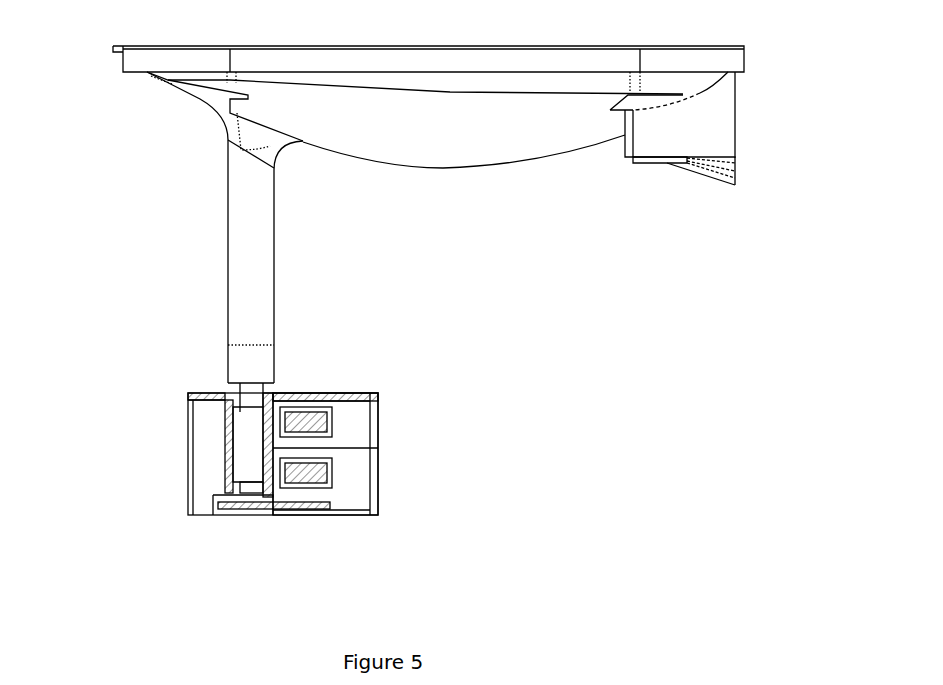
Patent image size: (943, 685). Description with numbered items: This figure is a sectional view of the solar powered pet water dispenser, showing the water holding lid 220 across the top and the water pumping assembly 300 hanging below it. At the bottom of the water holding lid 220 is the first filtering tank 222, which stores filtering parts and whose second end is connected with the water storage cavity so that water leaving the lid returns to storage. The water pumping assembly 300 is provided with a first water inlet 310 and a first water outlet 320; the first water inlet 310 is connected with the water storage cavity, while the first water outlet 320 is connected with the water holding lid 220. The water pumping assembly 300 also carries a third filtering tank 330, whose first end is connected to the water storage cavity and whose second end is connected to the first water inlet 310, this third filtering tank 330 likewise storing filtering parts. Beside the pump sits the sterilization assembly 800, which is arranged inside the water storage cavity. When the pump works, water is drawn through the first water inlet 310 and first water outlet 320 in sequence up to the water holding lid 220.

The water holding lid 220 is at (295, 105).
The first filtering tank 222 is at (715, 137).
The water pumping assembly 300 is at (353, 497).
The first water inlet 310 is at (250, 454).
The first water outlet 320 is at (250, 387).
The third filtering tank 330 is at (203, 465).
The sterilization assembly 800 is at (373, 473).